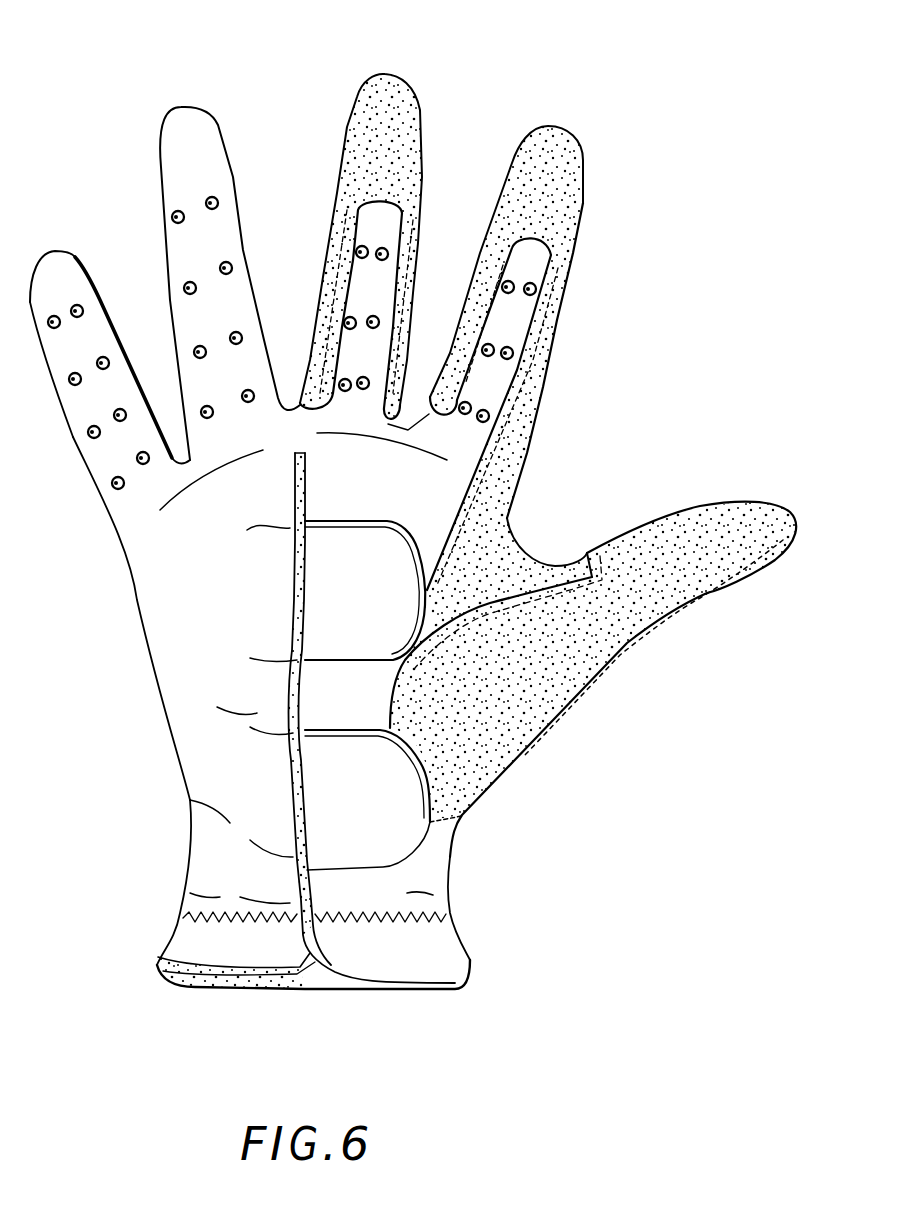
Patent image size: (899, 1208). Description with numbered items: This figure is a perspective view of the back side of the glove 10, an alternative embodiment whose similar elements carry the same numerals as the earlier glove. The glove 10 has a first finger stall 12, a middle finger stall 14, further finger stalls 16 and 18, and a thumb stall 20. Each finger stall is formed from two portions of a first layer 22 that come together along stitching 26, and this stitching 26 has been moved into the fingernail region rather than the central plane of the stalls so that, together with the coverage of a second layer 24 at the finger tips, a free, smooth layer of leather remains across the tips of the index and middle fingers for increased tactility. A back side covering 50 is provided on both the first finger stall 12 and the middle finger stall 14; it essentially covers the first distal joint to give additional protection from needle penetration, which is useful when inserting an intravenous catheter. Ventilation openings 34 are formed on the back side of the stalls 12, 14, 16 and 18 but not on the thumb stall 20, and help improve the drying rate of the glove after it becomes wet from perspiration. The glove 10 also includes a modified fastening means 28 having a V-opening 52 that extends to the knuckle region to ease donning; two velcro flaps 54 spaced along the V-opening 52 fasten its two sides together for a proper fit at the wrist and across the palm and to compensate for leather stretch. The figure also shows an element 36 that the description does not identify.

The glove 10 is at (105, 684).
The first finger stall 12 is at (550, 127).
The middle finger stall 14 is at (407, 80).
The finger stall 16 is at (204, 107).
The finger stall 18 is at (57, 252).
The thumb stall 20 is at (727, 503).
The first layer 22 is at (183, 740).
The second layer 24 is at (693, 587).
The stitching 26 is at (522, 370).
The fastening means 28 is at (330, 588).
The ventilation openings 34 is at (196, 351).
The wrist stitching 36 is at (180, 915).
The back side covering 50 is at (362, 100).
The V-opening 52 is at (310, 983).
The velcro flaps 54 is at (387, 573).